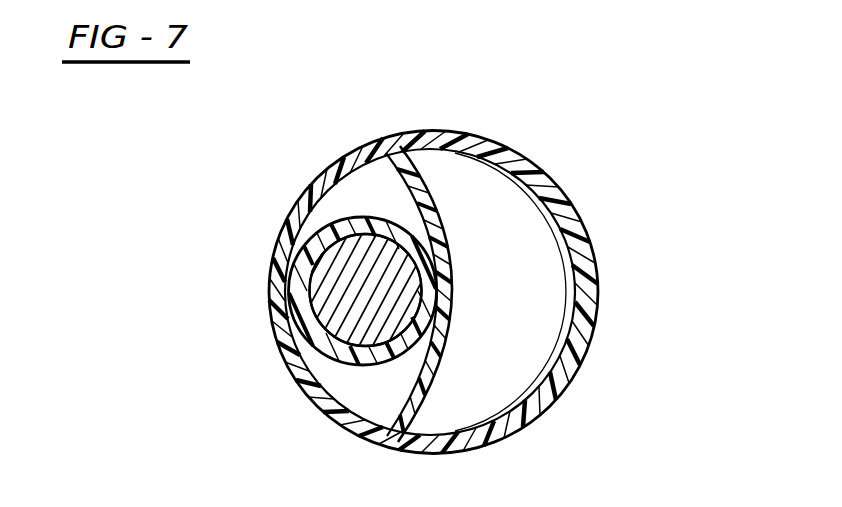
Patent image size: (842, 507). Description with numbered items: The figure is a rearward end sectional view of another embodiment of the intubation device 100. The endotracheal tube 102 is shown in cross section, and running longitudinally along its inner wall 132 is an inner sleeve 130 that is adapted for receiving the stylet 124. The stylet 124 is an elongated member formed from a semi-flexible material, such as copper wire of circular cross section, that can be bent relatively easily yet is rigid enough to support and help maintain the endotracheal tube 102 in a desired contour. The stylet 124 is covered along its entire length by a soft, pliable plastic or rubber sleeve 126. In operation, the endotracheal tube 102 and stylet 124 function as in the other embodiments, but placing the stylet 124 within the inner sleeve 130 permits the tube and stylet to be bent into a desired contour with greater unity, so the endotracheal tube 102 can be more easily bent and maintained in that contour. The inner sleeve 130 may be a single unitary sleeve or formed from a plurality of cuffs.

The intubation device 100 is at (548, 132).
The endotracheal tube 102 is at (602, 202).
The stylet 124 is at (343, 379).
The sleeve 126 is at (342, 224).
The inner sleeve 130 is at (458, 371).
The inner wall 132 is at (560, 274).